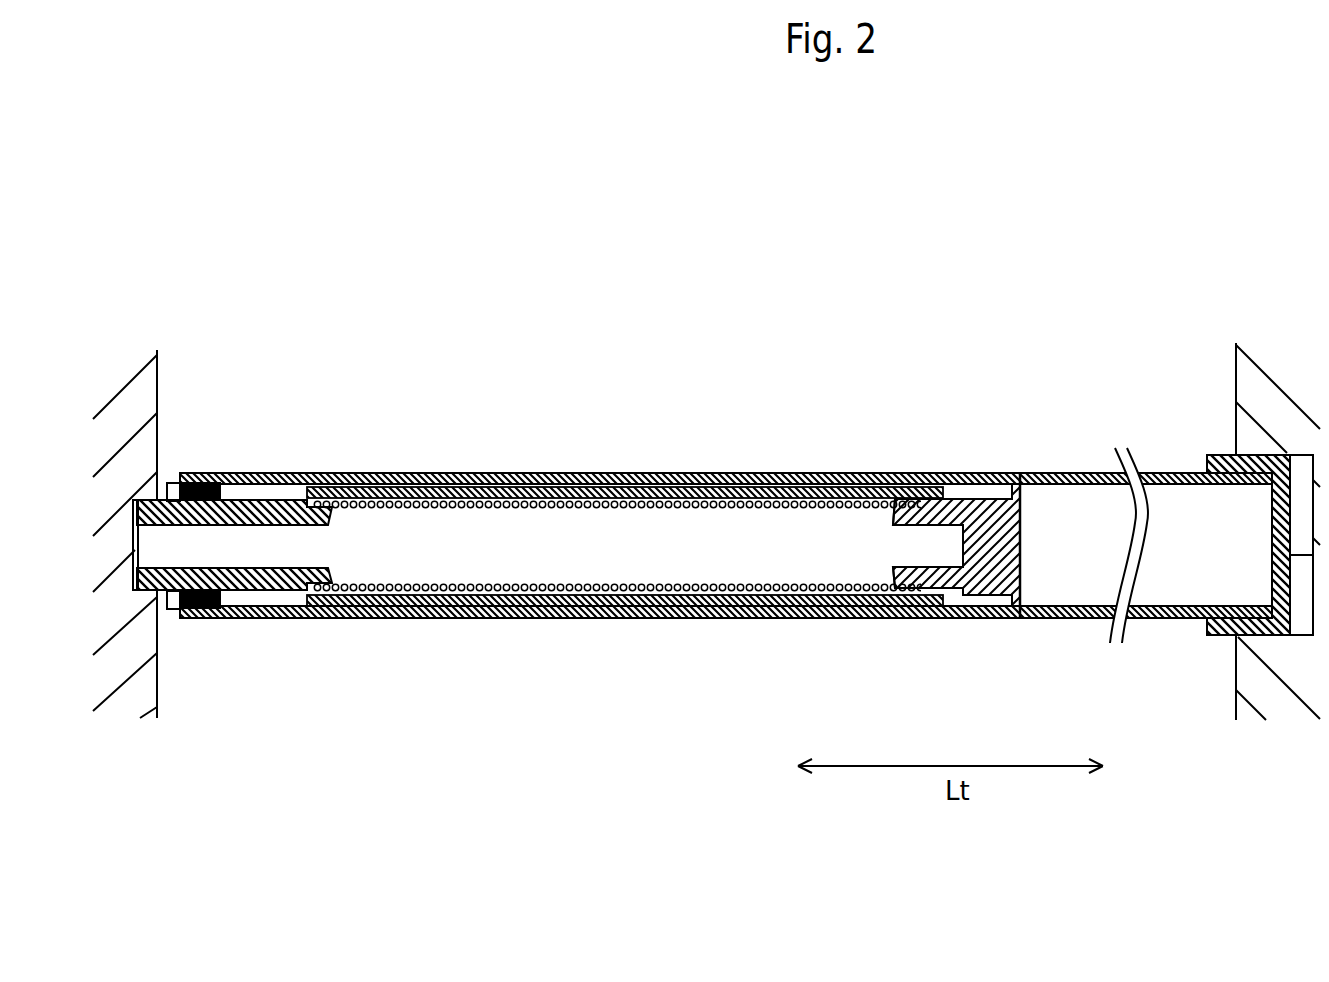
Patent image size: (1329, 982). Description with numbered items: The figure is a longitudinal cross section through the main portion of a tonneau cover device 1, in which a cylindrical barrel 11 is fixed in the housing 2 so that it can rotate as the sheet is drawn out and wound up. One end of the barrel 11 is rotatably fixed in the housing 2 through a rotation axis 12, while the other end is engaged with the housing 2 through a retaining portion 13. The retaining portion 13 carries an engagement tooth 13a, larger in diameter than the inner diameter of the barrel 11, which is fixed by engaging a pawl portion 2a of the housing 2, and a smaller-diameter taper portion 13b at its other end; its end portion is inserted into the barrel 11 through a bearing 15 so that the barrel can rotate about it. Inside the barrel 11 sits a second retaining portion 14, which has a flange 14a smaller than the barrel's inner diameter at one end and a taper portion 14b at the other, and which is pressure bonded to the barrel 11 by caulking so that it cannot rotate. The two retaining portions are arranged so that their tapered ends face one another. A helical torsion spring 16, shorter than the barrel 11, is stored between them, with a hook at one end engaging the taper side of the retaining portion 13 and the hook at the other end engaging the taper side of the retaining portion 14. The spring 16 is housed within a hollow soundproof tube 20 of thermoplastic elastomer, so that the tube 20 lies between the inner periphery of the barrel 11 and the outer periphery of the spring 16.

The tonneau cover device 1 is at (1220, 214).
The housing 2 is at (147, 390).
The pawl portion 2a is at (158, 590).
The barrel 11 is at (962, 472).
The rotation axis 12 is at (1217, 633).
The retaining portion 13 is at (274, 500).
The engagement tooth 13a is at (161, 590).
The taper portion 13b is at (306, 580).
The retaining portion 14 is at (968, 588).
The flange 14a is at (1020, 618).
The taper portion 14b is at (913, 590).
The bearing 15 is at (182, 476).
The torsion spring 16 is at (560, 487).
The soundproof tube 20 is at (665, 499).